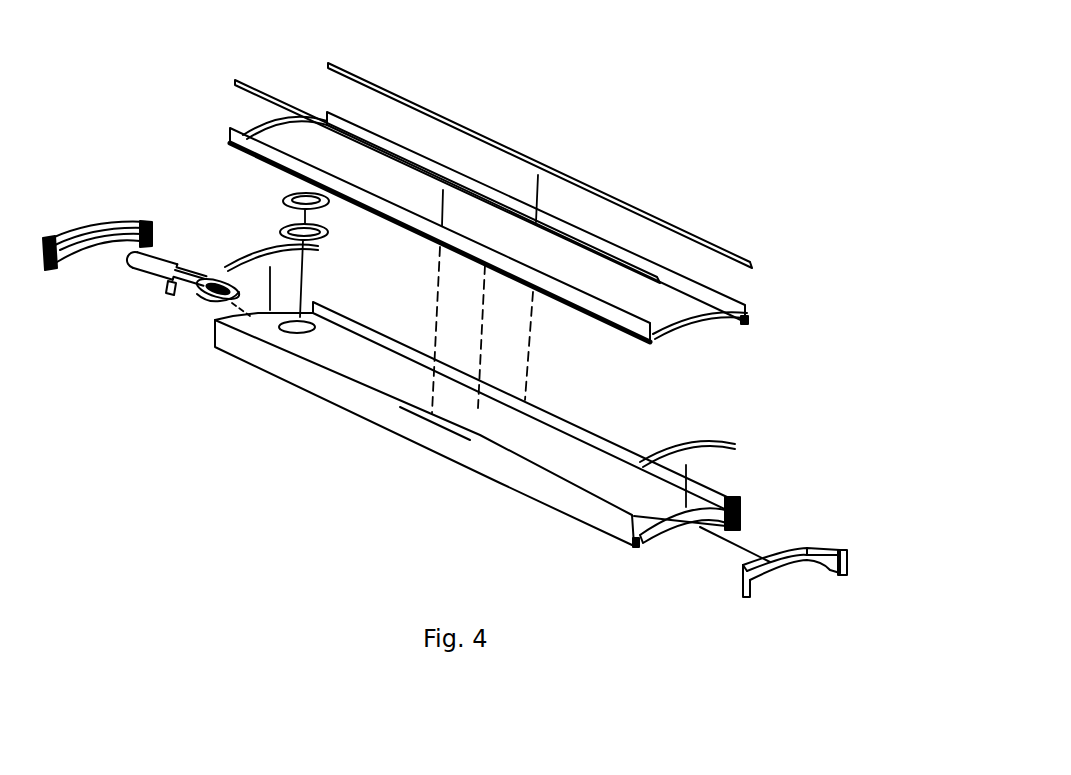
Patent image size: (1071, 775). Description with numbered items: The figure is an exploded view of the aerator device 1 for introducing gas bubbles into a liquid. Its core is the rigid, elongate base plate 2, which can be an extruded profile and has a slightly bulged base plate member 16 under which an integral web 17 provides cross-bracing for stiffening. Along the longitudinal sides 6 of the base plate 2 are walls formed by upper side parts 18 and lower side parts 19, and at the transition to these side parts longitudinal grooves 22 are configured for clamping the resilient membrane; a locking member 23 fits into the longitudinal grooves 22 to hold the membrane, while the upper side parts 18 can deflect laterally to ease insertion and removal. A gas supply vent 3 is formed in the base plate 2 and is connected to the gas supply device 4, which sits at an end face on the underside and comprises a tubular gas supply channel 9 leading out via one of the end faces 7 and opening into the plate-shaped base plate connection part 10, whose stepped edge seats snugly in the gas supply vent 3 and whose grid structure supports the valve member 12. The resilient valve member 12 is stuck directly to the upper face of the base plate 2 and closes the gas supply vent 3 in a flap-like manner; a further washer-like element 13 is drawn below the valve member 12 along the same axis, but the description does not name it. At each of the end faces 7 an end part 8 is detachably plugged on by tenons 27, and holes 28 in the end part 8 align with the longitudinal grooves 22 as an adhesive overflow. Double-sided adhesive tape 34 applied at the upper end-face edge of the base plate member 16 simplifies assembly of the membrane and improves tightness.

The aerator device 1 is at (701, 170).
The base plate 2 is at (470, 469).
The gas supply vent 3 is at (294, 334).
The gas supply device 4 is at (156, 372).
The longitudinal sides 6 is at (563, 508).
The end faces 7 is at (653, 535).
The end part 8 is at (97, 226).
The tubular gas supply channel 9 is at (148, 268).
The base plate connection part 10 is at (198, 297).
The valve member 12 is at (292, 198).
The washer 13 is at (290, 232).
The base plate member 16 is at (553, 453).
The web 17 is at (678, 521).
The upper side parts 18 is at (740, 495).
The lower side parts 19 is at (636, 545).
The longitudinal grooves 22 is at (636, 533).
The locking member 23 is at (722, 243).
The tenons 27 is at (55, 266).
The holes 28 is at (847, 566).
The double-sided adhesive tape 34 is at (733, 442).